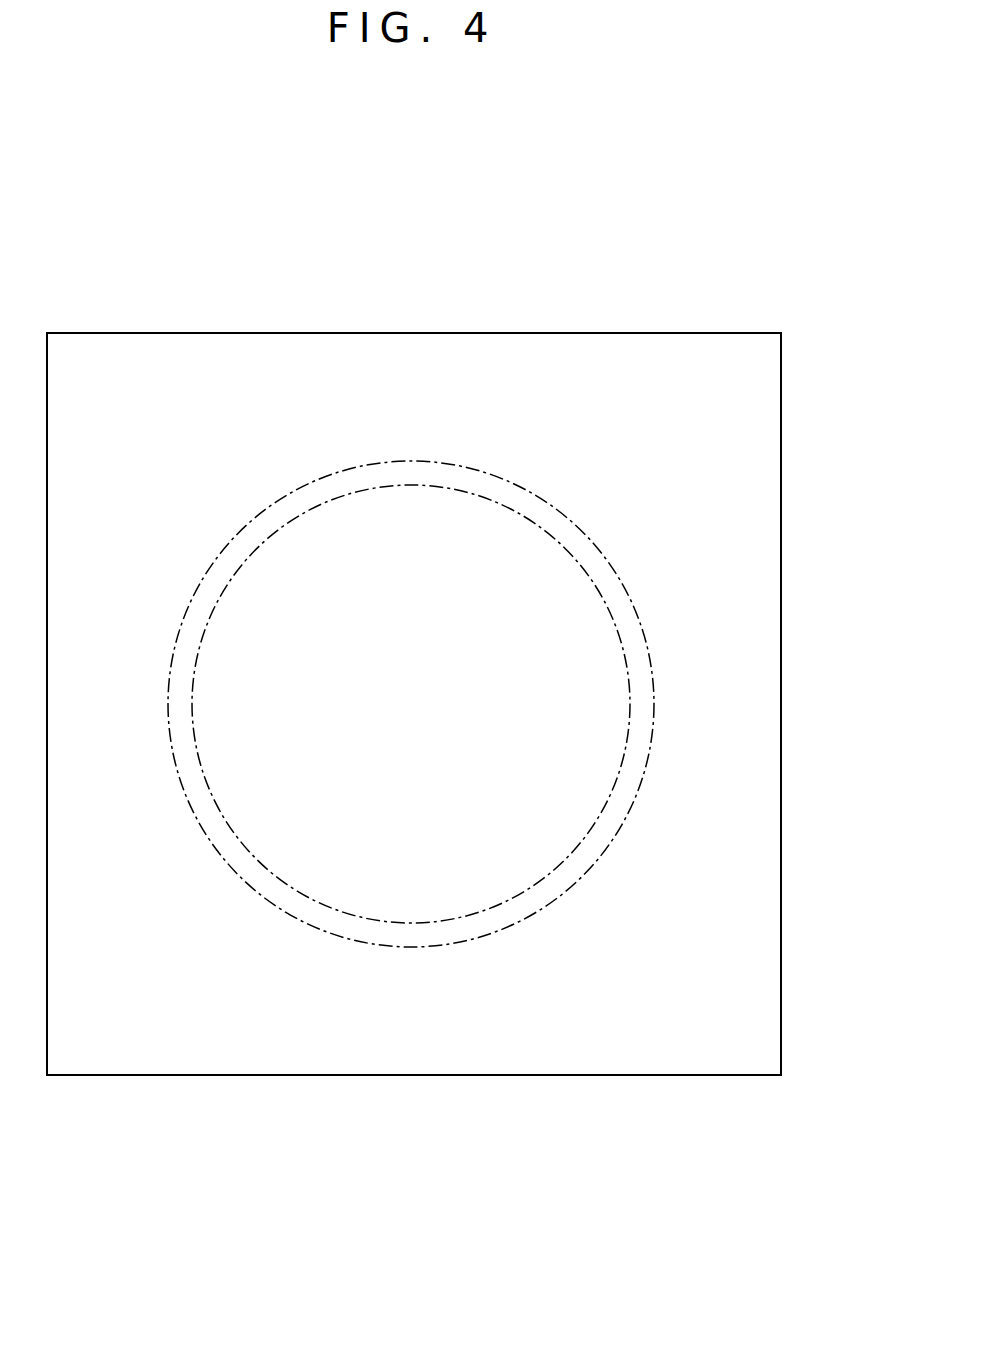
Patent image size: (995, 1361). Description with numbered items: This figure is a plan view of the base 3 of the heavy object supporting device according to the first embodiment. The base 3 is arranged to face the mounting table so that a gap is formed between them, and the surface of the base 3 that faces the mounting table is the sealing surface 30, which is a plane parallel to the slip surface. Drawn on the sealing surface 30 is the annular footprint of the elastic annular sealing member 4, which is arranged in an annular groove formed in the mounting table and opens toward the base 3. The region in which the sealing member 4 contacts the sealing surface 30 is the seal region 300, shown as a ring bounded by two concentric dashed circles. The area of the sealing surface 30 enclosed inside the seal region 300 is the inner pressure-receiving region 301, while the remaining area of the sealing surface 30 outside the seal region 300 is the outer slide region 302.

The base 3 is at (454, 698).
The sealing surface 30 is at (454, 761).
The elastic annular sealing member 4 is at (497, 825).
The seal region 300 is at (497, 918).
The inner pressure-receiving region 301 is at (377, 857).
The outer slide region 302 is at (175, 1005).